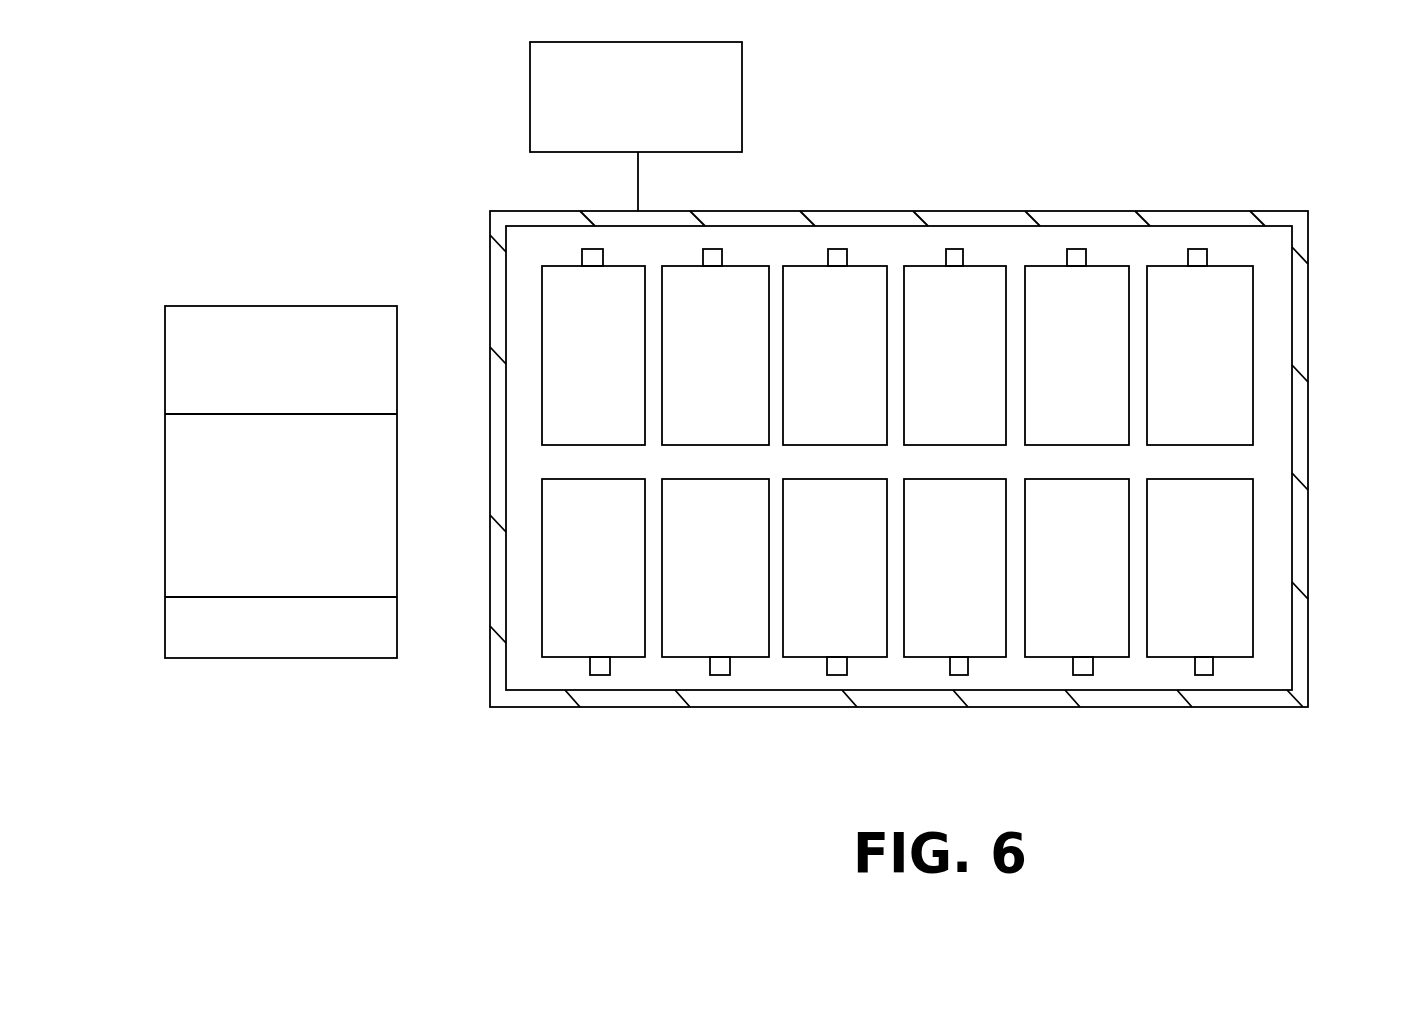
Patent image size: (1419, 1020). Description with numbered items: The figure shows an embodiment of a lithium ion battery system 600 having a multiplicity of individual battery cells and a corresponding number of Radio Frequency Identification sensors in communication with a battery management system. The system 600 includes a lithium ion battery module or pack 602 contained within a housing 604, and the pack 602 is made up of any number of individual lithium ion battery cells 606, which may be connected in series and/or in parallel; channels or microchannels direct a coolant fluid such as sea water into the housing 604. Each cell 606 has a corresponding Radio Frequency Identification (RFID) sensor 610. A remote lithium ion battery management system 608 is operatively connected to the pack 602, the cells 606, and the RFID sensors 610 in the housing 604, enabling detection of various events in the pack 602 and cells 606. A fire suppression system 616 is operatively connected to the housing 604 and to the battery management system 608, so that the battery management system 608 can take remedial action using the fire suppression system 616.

The system 600 is at (354, 134).
The lithium ion battery module or pack 602 is at (1318, 343).
The housing 604 is at (1237, 211).
The lithium ion battery cell 606 is at (1227, 591).
The lithium ion battery management system 608 is at (285, 282).
The Radio Frequency Identification (RFID) sensor 610 is at (1076, 248).
The fire suppression system 616 is at (742, 92).